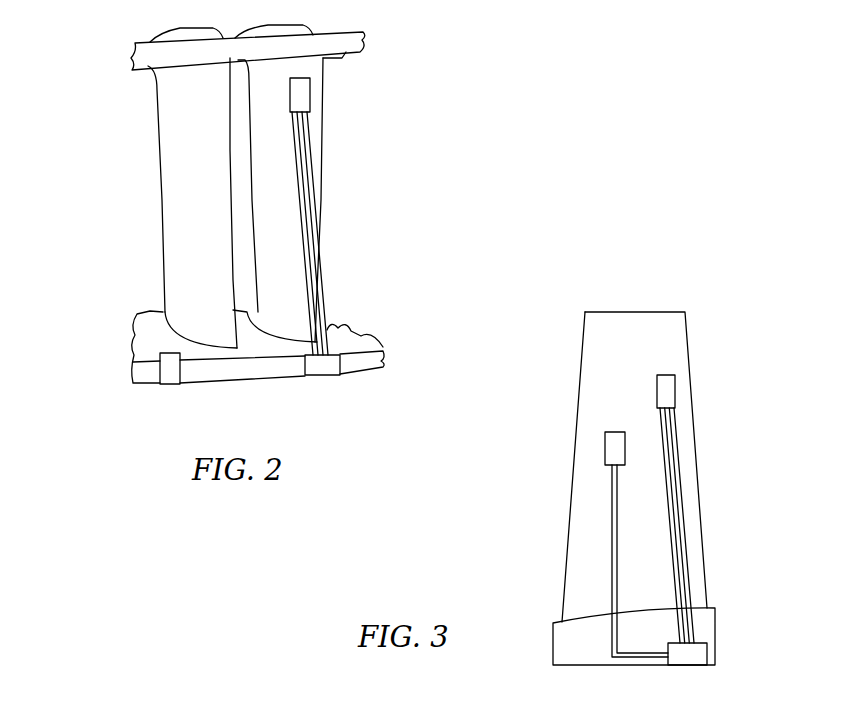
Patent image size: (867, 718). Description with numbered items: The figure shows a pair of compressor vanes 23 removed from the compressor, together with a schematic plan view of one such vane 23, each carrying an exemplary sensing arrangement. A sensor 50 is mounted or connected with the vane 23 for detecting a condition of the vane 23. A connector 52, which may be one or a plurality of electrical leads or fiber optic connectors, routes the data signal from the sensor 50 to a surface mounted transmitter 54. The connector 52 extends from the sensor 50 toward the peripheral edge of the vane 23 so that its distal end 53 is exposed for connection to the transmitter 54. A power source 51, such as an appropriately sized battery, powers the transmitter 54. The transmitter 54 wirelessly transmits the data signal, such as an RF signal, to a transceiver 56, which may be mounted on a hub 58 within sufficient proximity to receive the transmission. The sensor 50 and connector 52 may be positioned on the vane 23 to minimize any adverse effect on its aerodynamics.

In FIG. 2, the vane 23 is at (263, 133).
In FIG. 3, the vane 23 is at (687, 337).
In FIG. 2, the sensor 50 is at (310, 93).
In FIG. 3, the sensor 50 is at (676, 390).
In FIG. 3, the power source 51 is at (605, 445).
In FIG. 2, the connector 52 is at (313, 257).
In FIG. 3, the connector 52 is at (665, 447).
In FIG. 2, the distal end 53 is at (340, 340).
In FIG. 3, the distal end 53 is at (700, 638).
In FIG. 2, the transmitter 54 is at (322, 363).
In FIG. 3, the transmitter 54 is at (685, 657).
In FIG. 2, the transceiver 56 is at (168, 377).
In FIG. 2, the hub 58 is at (150, 330).